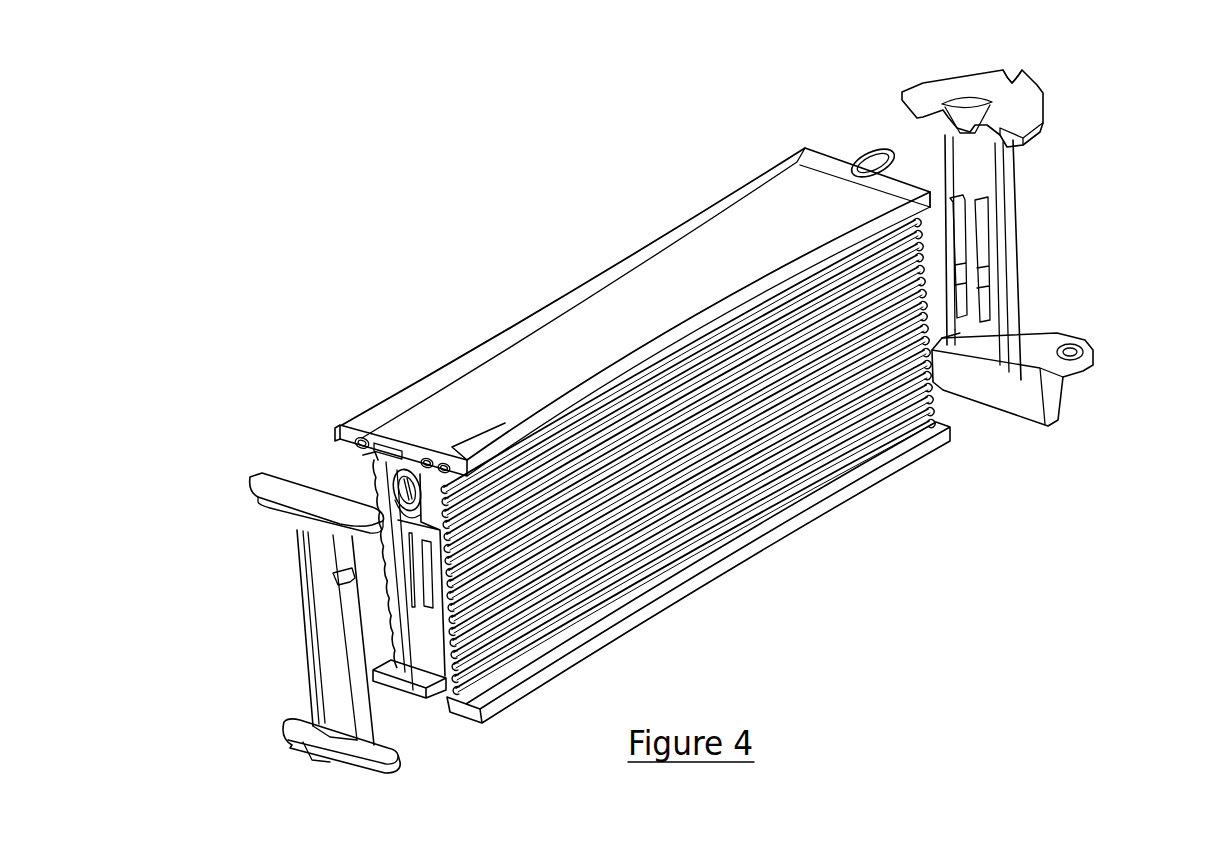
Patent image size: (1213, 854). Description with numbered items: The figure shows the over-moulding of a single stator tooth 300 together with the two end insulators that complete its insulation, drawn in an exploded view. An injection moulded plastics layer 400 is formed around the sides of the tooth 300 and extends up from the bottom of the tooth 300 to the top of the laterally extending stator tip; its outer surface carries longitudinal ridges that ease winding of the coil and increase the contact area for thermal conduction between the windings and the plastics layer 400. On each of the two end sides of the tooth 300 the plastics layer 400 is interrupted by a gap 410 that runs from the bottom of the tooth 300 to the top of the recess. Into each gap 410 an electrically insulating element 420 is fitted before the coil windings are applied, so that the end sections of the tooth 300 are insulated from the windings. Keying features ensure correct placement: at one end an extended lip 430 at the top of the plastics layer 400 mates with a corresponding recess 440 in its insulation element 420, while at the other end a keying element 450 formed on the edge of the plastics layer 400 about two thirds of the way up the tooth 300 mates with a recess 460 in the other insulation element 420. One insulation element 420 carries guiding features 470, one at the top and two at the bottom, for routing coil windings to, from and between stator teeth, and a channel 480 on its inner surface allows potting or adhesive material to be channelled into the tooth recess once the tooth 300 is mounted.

The stator tooth 300 is at (594, 318).
The injection moulded plastics layer 400 is at (703, 545).
The gap 410 is at (430, 696).
The electrically insulating element 420 is at (270, 478).
The extended lip 430 is at (873, 160).
The recess 440 is at (965, 120).
The keying element 450 is at (407, 483).
The recess 460 is at (335, 583).
The guiding feature 470 is at (1005, 82).
The channel 480 is at (990, 385).